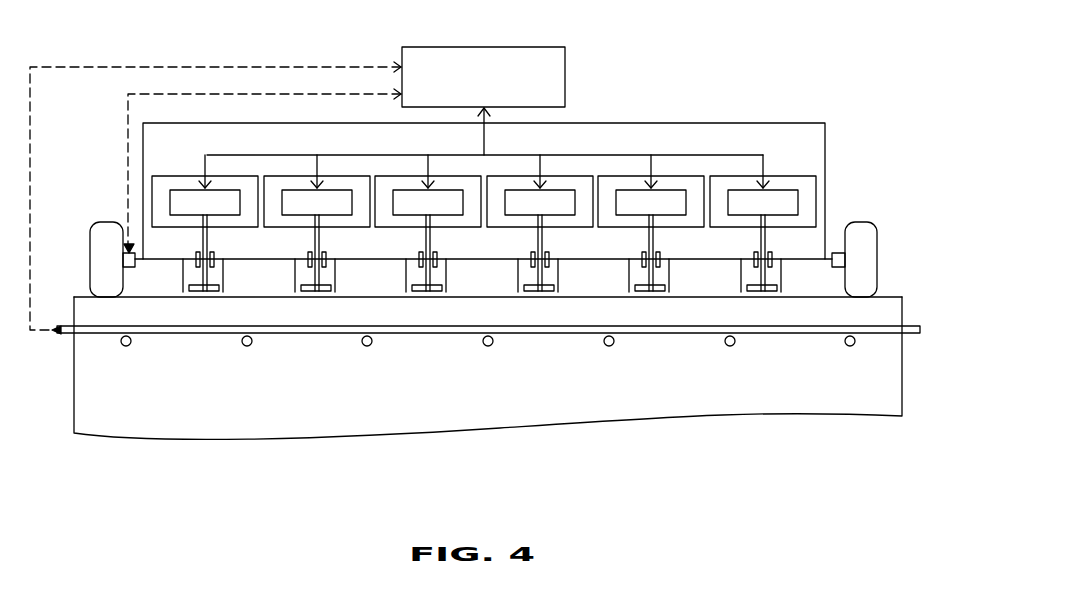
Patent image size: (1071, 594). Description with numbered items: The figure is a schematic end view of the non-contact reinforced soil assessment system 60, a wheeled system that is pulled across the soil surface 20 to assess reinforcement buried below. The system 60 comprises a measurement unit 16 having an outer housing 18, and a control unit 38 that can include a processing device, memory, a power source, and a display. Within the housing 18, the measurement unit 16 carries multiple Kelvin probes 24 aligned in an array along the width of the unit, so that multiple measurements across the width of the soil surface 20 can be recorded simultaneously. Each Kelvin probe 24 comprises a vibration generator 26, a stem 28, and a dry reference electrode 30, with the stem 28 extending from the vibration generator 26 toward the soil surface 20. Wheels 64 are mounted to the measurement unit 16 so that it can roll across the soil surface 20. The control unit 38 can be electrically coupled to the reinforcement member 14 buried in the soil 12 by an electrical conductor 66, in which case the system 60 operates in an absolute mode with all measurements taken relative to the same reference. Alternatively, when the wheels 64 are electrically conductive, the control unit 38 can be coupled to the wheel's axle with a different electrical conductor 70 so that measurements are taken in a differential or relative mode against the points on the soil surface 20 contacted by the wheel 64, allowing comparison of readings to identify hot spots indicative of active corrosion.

The soil 12 is at (126, 430).
The reinforcement member 14 is at (805, 338).
The measurement unit 16 is at (846, 124).
The outer housing 18 is at (660, 122).
The soil surface 20 is at (880, 296).
The Kelvin probe 24 is at (828, 196).
The vibration generator 26 is at (484, 185).
The stem 28 is at (313, 243).
The dry reference electrode 30 is at (205, 291).
The control unit 38 is at (483, 101).
The non-contact reinforced soil assessment system 60 is at (915, 71).
The wheels 64 is at (74, 228).
The electrical conductor 66 is at (177, 66).
The electrical conductor 70 is at (258, 92).